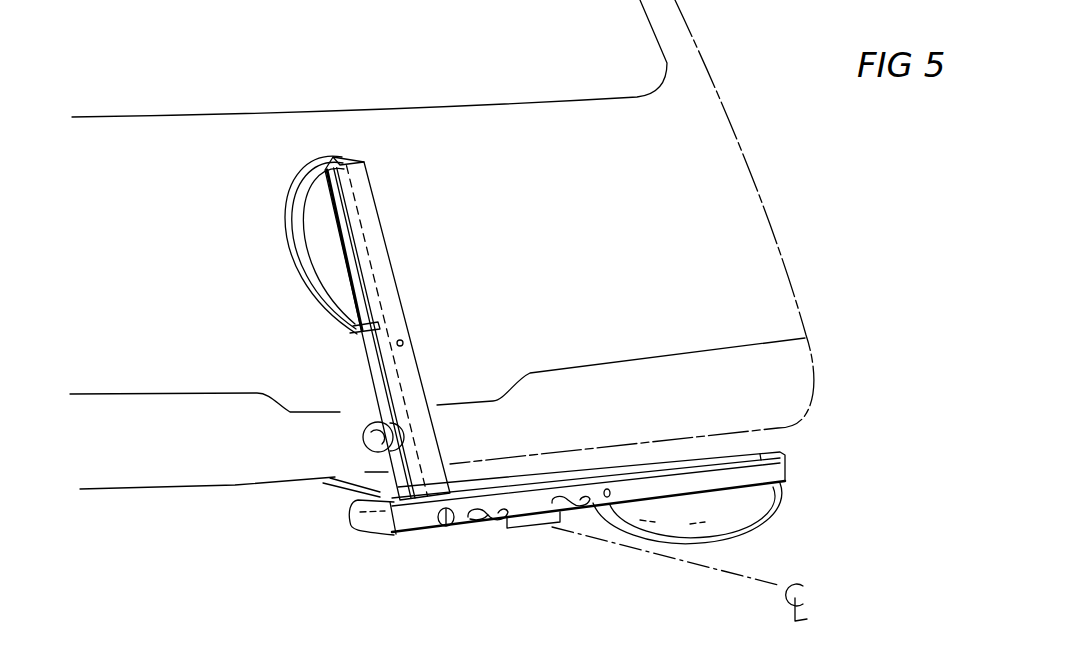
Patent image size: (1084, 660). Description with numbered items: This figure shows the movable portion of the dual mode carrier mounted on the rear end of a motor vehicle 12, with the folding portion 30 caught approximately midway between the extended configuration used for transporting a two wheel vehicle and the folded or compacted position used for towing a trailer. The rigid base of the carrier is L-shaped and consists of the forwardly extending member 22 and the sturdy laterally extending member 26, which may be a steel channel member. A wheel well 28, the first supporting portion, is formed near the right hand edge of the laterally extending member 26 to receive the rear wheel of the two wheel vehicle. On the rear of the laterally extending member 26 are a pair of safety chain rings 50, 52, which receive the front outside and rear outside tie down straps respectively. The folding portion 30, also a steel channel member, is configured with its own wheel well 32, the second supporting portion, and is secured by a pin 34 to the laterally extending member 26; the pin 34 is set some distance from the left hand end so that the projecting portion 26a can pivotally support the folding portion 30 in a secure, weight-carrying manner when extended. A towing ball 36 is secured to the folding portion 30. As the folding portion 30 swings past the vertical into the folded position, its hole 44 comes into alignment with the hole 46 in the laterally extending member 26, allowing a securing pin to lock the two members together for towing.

The motor vehicle 12 is at (718, 152).
The forwardly extending member 22 is at (541, 526).
The laterally extending member 26 is at (717, 473).
The projecting portion 26a is at (352, 526).
The wheel well 28 is at (781, 494).
The folding portion 30 is at (377, 233).
The wheel well 32 is at (286, 225).
The pin 34 is at (447, 527).
The towing ball 36 is at (365, 441).
The hole 44 is at (404, 343).
The hole 46 is at (606, 488).
The ring 50 is at (495, 524).
The ring 52 is at (586, 506).